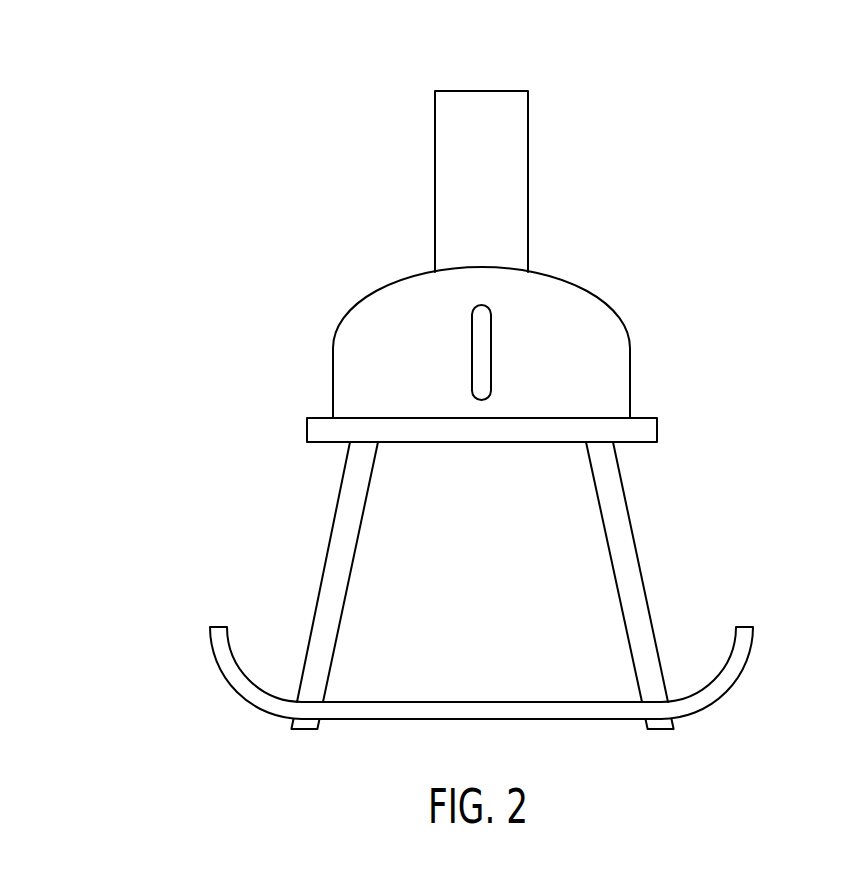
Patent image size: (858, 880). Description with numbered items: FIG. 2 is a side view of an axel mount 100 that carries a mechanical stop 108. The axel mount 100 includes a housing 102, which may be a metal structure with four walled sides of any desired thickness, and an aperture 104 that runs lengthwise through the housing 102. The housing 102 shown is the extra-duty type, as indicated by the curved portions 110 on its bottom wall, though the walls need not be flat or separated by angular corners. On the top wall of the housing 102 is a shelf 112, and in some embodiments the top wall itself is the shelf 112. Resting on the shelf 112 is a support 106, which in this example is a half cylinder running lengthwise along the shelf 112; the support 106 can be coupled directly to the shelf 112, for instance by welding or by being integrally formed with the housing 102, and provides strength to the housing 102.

The axel mount 100 is at (134, 94).
The housing 102 is at (723, 495).
The aperture 104 is at (500, 512).
The support 106 is at (618, 338).
The mechanical stop 108 is at (523, 165).
The curved portions 110 is at (220, 644).
The shelf 112 is at (655, 431).